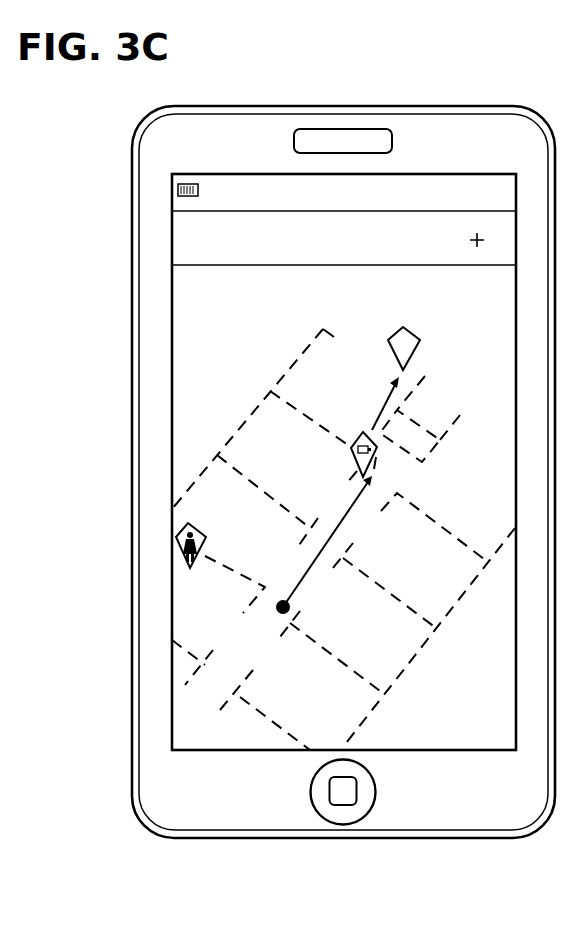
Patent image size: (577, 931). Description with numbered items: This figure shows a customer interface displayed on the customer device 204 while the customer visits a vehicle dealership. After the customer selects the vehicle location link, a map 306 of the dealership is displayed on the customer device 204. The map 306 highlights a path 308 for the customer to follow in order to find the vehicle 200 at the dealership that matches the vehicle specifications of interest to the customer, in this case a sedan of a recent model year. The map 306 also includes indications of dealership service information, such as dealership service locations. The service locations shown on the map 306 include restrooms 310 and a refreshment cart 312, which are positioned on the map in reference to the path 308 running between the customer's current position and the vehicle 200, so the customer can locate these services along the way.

The customer device 204 is at (410, 106).
The map 306 is at (301, 754).
The path 308 is at (338, 522).
The refreshment cart 312 is at (353, 441).
The vehicle 200 is at (410, 324).
The restrooms 310 is at (188, 523).